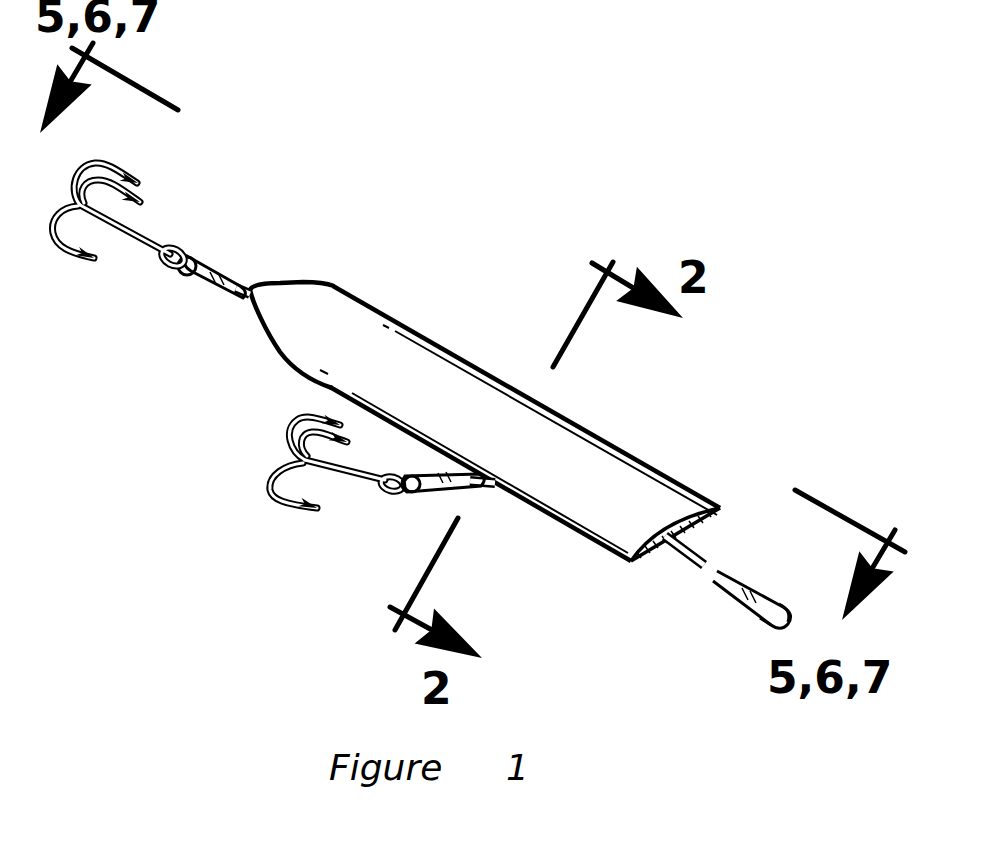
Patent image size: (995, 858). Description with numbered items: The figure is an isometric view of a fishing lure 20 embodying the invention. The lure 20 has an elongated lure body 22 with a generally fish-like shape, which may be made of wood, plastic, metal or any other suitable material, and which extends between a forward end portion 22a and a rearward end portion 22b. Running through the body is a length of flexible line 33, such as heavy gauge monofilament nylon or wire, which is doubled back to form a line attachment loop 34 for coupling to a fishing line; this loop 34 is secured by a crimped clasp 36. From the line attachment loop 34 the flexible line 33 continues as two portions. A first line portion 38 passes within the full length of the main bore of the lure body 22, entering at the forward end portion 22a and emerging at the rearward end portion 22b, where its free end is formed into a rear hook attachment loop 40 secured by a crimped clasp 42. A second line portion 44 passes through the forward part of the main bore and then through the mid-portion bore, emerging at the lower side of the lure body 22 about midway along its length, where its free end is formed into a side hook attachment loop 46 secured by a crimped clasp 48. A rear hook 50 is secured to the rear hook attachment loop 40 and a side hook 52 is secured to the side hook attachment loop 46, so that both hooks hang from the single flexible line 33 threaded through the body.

The fishing lure 20 is at (457, 309).
The lure body 22 is at (620, 477).
The forward end portion 22a is at (640, 565).
The rearward end portion 22b is at (310, 283).
The flexible line 33 is at (763, 620).
The line attachment loop 34 is at (773, 610).
The crimped clasp 36 is at (740, 603).
The first line portion 38 is at (247, 297).
The rear hook attachment loop 40 is at (190, 260).
The crimped clasp 42 is at (228, 277).
The second line portion 44 is at (473, 490).
The side hook attachment loop 46 is at (410, 502).
The crimped clasp 48 is at (447, 497).
The rear hook 50 is at (72, 243).
The side hook 52 is at (290, 503).